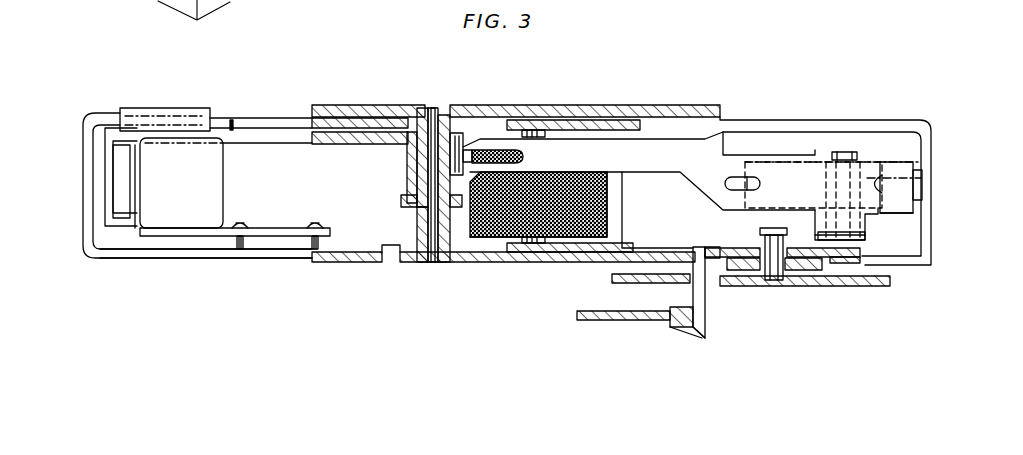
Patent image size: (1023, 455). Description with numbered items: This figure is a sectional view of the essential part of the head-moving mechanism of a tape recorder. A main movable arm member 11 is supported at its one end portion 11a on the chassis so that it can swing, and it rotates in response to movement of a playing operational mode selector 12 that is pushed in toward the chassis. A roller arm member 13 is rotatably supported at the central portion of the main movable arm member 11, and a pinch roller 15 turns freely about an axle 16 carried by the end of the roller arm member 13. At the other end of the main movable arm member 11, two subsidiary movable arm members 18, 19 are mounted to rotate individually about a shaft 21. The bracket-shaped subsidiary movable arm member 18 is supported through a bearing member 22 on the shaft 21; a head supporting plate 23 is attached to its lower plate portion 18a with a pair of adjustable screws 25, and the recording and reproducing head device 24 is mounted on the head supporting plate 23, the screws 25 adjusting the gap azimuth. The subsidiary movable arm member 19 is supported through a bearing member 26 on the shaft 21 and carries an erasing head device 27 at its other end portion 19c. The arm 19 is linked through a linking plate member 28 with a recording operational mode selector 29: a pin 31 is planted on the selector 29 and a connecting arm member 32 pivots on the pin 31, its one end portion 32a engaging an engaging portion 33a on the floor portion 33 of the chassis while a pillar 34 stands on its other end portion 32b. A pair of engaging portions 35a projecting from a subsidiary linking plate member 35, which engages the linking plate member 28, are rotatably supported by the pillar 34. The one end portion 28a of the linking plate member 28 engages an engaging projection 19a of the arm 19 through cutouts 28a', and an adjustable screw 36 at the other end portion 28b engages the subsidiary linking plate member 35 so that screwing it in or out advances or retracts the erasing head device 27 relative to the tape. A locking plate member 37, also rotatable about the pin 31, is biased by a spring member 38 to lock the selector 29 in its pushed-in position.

The main movable arm member 11 is at (497, 104).
The one end portion of main movable arm member 11a is at (935, 140).
The playing operational mode selector 12 is at (652, 284).
The roller arm member 13 is at (563, 120).
The pinch roller 15 is at (495, 227).
The axle 16 is at (533, 123).
The subsidiary movable arm member 18 is at (272, 117).
The lower plate portion 18a is at (185, 259).
The subsidiary movable arm member 19 is at (231, 120).
The engaging projection 19a is at (432, 106).
The other end portion of subsidiary movable arm member 19c is at (125, 135).
The shaft 21 is at (430, 264).
The bearing member 22 is at (415, 222).
The head supporting plate 23 is at (283, 228).
The recording and reproducing head device 24 is at (210, 167).
The adjustable screws 25 is at (310, 240).
The bearing member 26 is at (406, 182).
The erasing head device 27 is at (117, 177).
The linking plate member 28 is at (655, 162).
The one end portion of linking plate member 28a is at (491, 118).
The cutouts 28a' is at (454, 115).
The other end portion of linking plate member 28b is at (912, 214).
The recording operational mode selector 29 is at (837, 287).
The pin 31 is at (771, 281).
The connecting arm member 32 is at (708, 247).
The one end portion of connecting arm member 32a is at (701, 328).
The other end portion of connecting arm member 32b is at (860, 262).
The floor portion of the chassis 33 is at (613, 321).
The engaging portion 33a is at (678, 328).
The pillar 34 is at (857, 214).
The subsidiary linking plate member 35 is at (780, 157).
The engaging portions 35a is at (824, 157).
The adjustable screw 36 is at (932, 178).
The locking plate member 37 is at (738, 271).
The spring member 38 is at (797, 237).